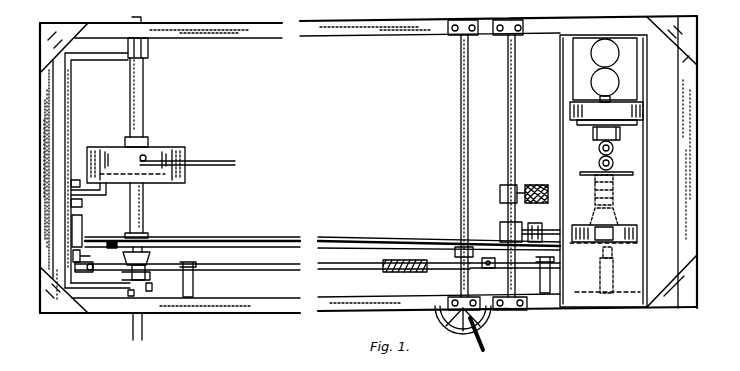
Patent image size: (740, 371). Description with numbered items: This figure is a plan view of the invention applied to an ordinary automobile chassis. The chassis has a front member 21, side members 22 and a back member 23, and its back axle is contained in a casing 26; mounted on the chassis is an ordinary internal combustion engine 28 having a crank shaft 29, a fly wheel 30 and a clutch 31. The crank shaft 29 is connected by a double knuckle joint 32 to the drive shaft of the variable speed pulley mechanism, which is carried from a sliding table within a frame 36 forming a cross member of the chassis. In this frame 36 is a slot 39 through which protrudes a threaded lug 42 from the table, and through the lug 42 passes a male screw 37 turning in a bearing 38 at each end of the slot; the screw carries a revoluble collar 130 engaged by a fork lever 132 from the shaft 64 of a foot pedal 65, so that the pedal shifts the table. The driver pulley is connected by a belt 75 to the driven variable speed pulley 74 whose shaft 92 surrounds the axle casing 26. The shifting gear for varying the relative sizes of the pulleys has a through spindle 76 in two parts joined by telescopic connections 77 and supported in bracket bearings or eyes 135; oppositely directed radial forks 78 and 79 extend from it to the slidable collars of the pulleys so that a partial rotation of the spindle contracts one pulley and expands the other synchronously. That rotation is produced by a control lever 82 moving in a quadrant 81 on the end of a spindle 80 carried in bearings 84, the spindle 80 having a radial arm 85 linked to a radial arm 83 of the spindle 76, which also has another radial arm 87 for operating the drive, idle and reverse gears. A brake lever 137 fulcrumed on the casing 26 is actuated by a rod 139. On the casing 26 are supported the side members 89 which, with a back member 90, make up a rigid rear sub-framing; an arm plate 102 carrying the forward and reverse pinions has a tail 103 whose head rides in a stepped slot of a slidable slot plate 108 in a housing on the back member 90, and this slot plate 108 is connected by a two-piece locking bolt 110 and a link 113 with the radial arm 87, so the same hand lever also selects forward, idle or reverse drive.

The front member 21 is at (687, 145).
The side members 22 is at (367, 36).
The back member 23 is at (54, 92).
The casing 26 is at (144, 90).
The internal combustion engine 28 is at (605, 69).
The crank shaft 29 is at (598, 99).
The fly wheel 30 is at (606, 113).
The clutch 31 is at (592, 132).
The double knuckle joint 32 is at (614, 153).
The frame 36 is at (603, 171).
The male screw 37 is at (638, 232).
The bearing 38 is at (590, 252).
The slot 39 is at (128, 295).
The lug 42 is at (613, 221).
The shaft 64 is at (516, 133).
The foot pedal 65 is at (537, 184).
The driven variable speed pulley 74 is at (178, 239).
The connecting belt 75 is at (280, 238).
The through spindle 76 is at (284, 268).
The telescopic connections 77 is at (402, 270).
The radial fork 78 is at (615, 251).
The radial fork 79 is at (148, 292).
The spindle 80 is at (460, 143).
The quadrant 81 is at (487, 325).
The control lever 82 is at (476, 344).
The radial arm 83 is at (492, 267).
The bearings 84 is at (455, 37).
The radial arm 85 is at (457, 266).
The radial arm 87 is at (52, 288).
The side member 89 is at (149, 52).
The back member 90 is at (72, 130).
The shaft 92 is at (144, 203).
The arm plate 102 is at (108, 194).
The tail 103 is at (70, 203).
The slidable slot plate 108 is at (70, 184).
The locking bolt 110 is at (83, 226).
The link 113 is at (72, 258).
The revoluble collar 130 is at (548, 226).
The fork lever 132 is at (503, 223).
The bracket bearings 135 is at (197, 285).
The lever 137 is at (146, 156).
The rod 139 is at (191, 154).